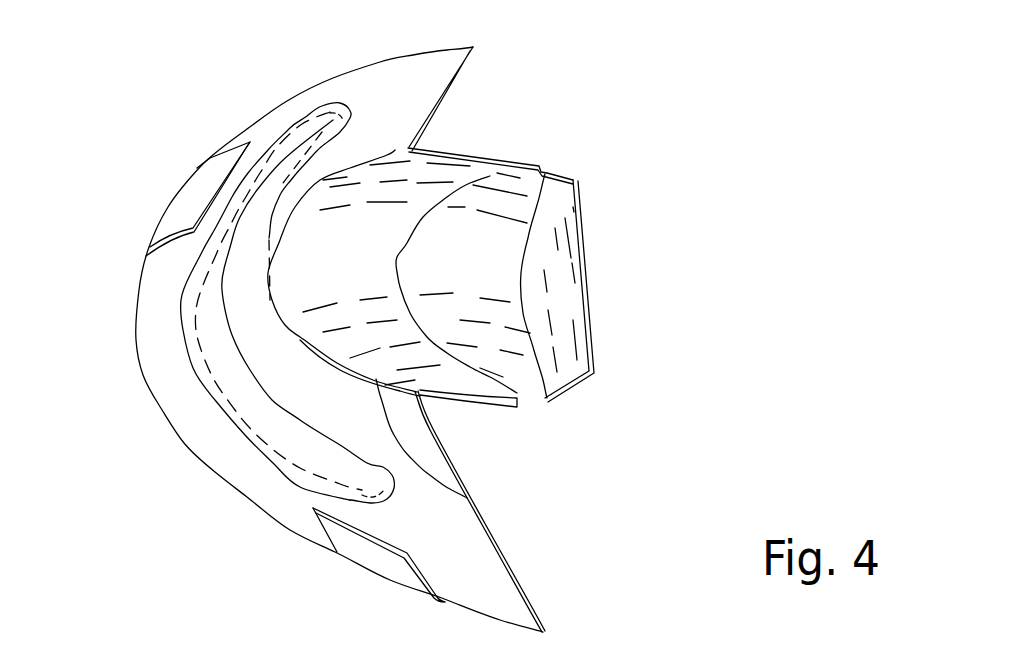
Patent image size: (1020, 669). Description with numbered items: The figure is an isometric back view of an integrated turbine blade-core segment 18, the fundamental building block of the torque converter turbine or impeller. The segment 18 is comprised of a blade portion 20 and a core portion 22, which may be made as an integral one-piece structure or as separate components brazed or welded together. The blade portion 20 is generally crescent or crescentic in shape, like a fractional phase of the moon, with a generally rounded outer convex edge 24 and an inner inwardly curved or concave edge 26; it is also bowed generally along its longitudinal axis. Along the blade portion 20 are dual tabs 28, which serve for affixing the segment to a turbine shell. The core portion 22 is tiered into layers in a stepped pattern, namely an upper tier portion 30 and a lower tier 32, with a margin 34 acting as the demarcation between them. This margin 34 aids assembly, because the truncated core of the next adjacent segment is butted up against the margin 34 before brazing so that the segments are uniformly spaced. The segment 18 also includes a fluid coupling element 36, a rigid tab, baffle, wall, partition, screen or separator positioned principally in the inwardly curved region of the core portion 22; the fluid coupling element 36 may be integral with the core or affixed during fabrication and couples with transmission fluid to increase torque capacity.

The integrated turbine blade-core segment 18 is at (192, 118).
The blade portion 20 is at (240, 505).
The core portion 22 is at (500, 410).
The outer convex edge 24 is at (185, 443).
The inner concave edge 26 is at (467, 498).
The tabs 28 is at (193, 197).
The upper tier portion 30 is at (420, 173).
The lower tier 32 is at (547, 173).
The margin 34 is at (490, 176).
The fluid coupling element 36 is at (568, 290).